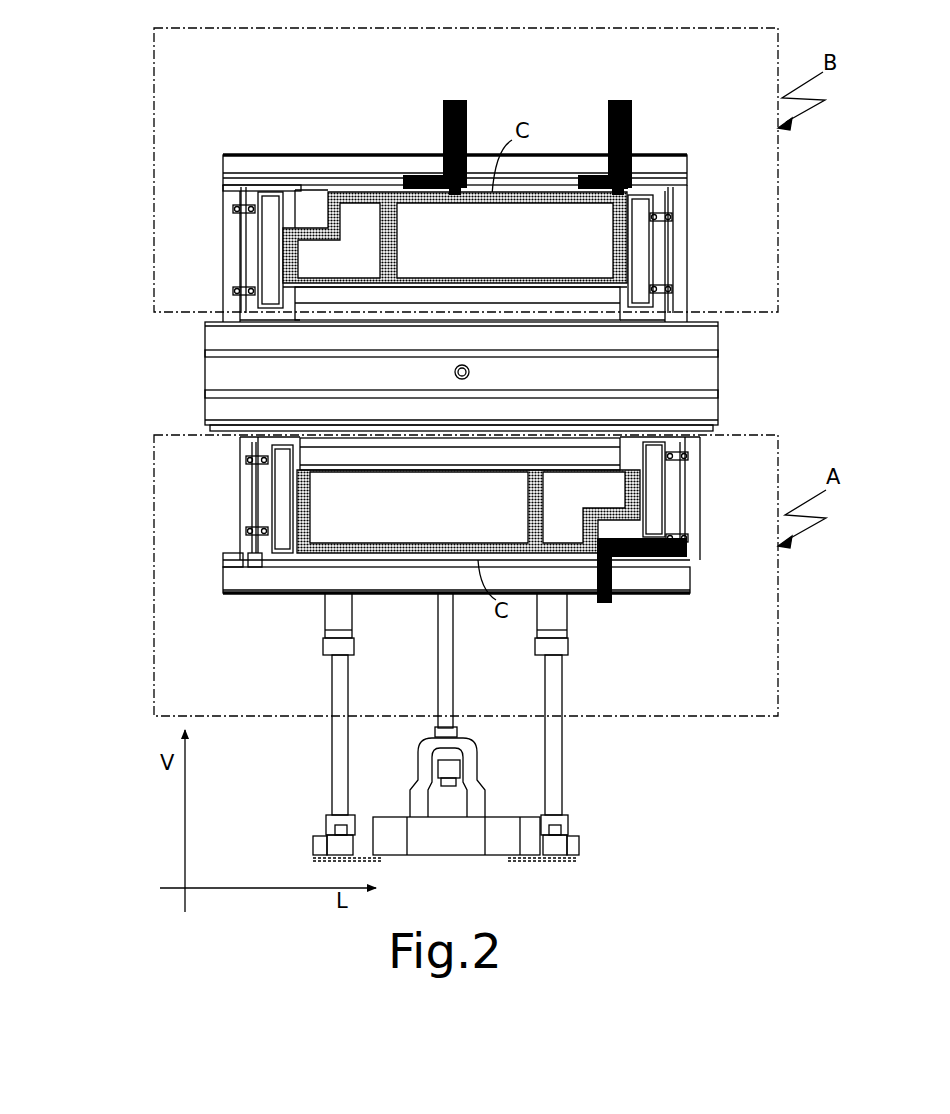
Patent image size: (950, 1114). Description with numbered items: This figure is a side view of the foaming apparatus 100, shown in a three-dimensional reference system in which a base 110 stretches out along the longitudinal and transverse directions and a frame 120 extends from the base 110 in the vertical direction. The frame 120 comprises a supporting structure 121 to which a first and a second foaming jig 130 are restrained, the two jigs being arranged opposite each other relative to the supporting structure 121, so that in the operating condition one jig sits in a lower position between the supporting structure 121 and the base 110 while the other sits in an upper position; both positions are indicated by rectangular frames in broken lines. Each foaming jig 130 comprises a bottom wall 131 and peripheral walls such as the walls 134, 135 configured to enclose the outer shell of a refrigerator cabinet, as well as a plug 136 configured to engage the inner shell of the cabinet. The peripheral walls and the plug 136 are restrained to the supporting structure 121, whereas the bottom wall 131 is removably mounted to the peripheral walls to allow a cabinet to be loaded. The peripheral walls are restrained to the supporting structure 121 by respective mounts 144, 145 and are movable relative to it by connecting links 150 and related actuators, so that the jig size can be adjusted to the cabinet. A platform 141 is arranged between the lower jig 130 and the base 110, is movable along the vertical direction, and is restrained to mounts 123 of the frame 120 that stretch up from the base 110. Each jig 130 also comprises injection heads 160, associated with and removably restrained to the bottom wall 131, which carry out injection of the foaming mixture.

The foaming apparatus 100 is at (118, 80).
The base 110 is at (528, 845).
The frame 120 is at (718, 372).
The supporting structure 121 is at (466, 366).
The mounts 123 is at (550, 730).
The foaming jig 130 is at (250, 137).
The bottom wall 131 is at (345, 185).
The peripheral wall 134 is at (262, 227).
The peripheral wall 135 is at (640, 237).
The plug 136 is at (518, 248).
The platform 141 is at (430, 592).
The mount 144 is at (231, 270).
The mount 145 is at (668, 270).
The connecting links 150 is at (240, 207).
The injection heads 160 is at (443, 122).